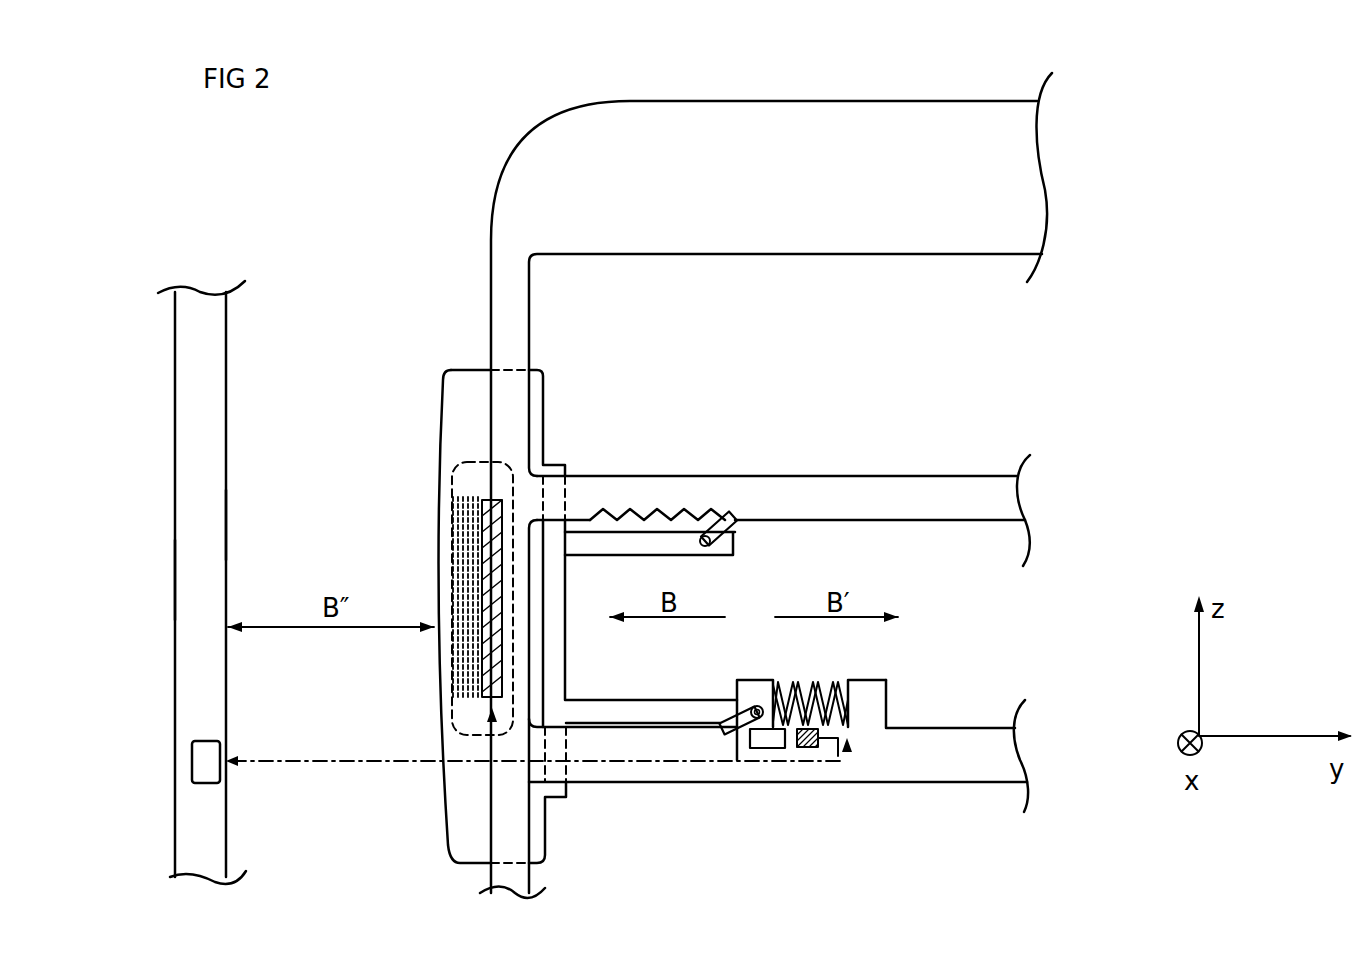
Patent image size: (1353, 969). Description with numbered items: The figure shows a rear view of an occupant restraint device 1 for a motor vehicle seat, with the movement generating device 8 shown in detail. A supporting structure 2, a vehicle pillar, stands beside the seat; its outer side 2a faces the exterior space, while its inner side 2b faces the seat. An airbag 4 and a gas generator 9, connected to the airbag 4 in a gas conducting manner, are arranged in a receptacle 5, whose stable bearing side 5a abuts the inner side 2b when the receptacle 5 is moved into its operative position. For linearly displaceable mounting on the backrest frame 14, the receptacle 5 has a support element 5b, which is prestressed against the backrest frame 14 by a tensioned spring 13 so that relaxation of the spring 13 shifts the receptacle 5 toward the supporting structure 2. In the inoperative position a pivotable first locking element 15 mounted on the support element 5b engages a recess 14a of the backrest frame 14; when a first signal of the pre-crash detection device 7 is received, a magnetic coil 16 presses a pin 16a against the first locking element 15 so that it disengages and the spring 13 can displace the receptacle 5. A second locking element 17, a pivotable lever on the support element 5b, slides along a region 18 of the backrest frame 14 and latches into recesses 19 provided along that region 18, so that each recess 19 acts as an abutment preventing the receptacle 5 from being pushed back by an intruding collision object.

The occupant restraint device 1 is at (462, 189).
The supporting structure 2 is at (188, 453).
The outer side 2a is at (172, 574).
The inner side 2b is at (232, 523).
The airbag 4 is at (477, 455).
The receptacle 5 is at (453, 548).
The bearing side 5a is at (437, 462).
The support element 5b is at (553, 587).
The pre-crash detection device 7 is at (205, 761).
The movement generating device 8 is at (847, 748).
The gas generator 9 is at (497, 687).
The spring 13 is at (822, 690).
The backrest frame 14 is at (840, 128).
The recess 14a is at (726, 737).
The first locking element 15 is at (737, 760).
The magnetic coil 16 is at (812, 748).
The pin 16a is at (775, 748).
The second locking element 17 is at (728, 512).
The region 18 is at (940, 492).
The recesses 19 is at (645, 511).